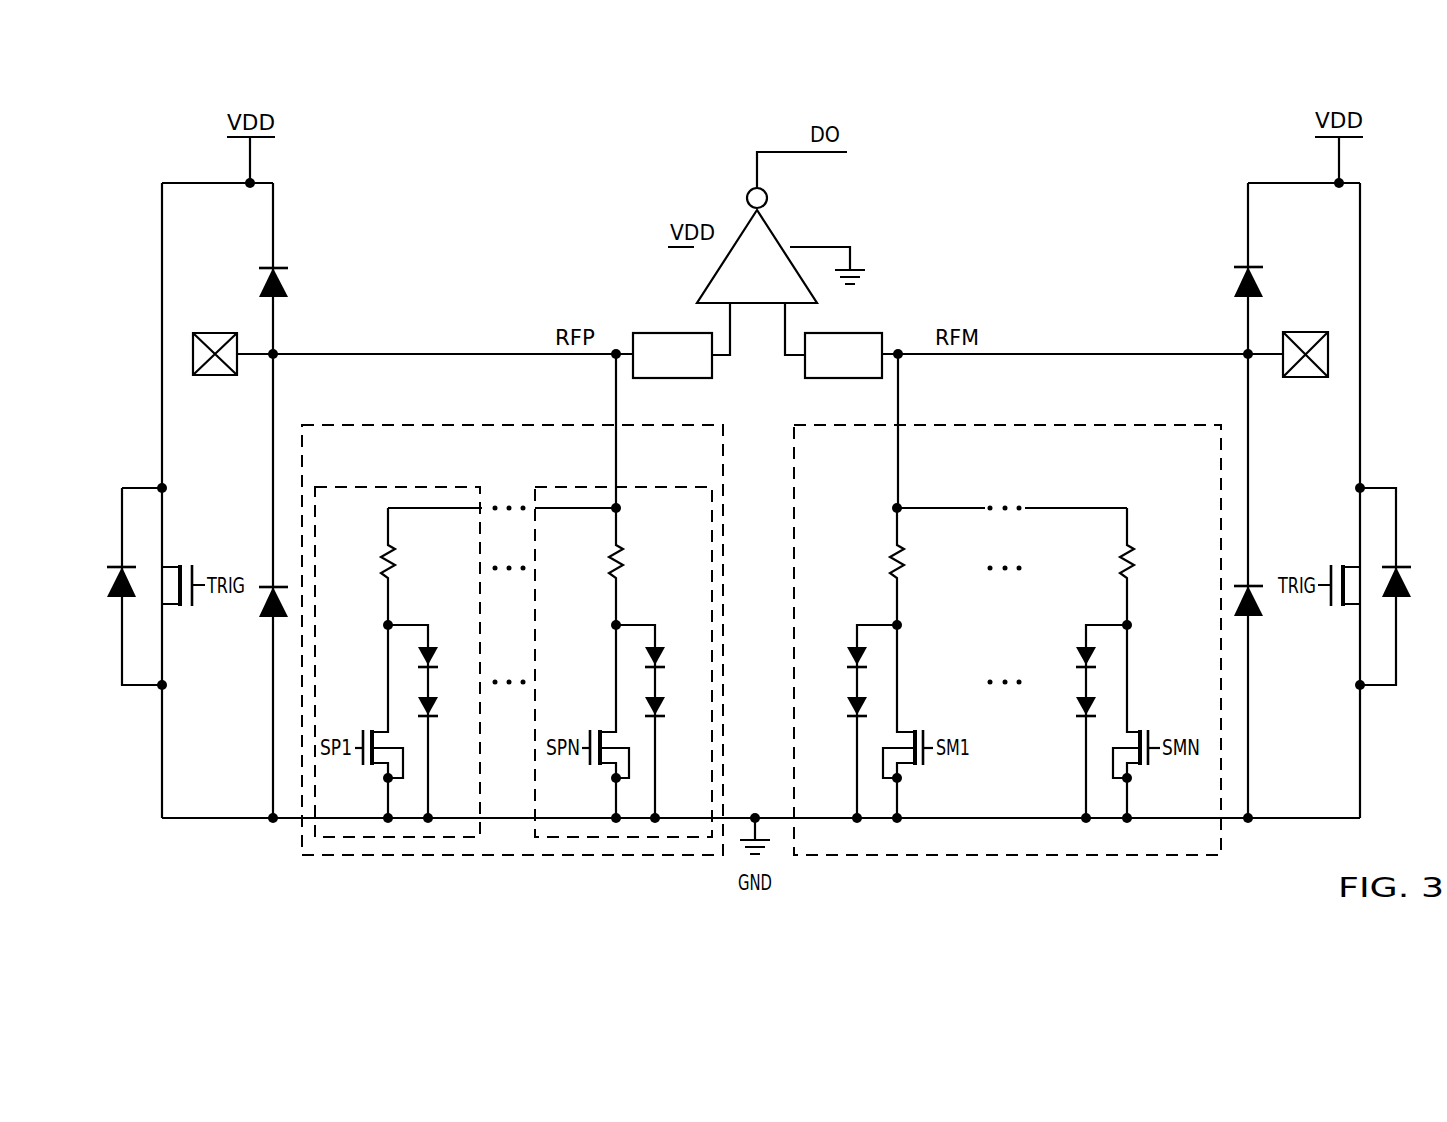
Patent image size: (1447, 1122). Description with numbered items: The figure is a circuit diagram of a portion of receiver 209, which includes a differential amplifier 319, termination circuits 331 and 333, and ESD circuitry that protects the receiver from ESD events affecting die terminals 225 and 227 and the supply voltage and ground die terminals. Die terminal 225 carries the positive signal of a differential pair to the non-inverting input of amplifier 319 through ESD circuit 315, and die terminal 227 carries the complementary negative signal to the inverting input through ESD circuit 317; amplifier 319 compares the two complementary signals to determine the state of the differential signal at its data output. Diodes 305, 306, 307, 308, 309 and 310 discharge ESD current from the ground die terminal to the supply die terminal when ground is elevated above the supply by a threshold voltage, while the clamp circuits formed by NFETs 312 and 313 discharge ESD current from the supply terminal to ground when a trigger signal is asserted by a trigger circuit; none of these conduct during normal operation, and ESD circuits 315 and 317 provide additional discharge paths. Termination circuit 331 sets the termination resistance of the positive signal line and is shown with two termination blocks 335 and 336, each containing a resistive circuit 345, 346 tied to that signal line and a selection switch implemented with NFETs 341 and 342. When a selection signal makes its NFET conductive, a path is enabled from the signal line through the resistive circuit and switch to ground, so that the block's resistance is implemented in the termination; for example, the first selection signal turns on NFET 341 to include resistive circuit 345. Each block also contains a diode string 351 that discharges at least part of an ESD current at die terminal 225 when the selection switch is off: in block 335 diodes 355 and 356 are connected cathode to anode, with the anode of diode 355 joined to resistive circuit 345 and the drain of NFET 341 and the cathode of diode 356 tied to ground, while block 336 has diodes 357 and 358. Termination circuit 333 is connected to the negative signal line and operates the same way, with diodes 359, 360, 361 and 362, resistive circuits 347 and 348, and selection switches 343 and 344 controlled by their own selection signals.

The receiver 209 is at (170, 104).
The die terminal 225 is at (227, 332).
The die terminal 227 is at (1300, 330).
The diode 305 is at (107, 586).
The diode 306 is at (259, 290).
The diode 307 is at (260, 607).
The diode 308 is at (1262, 285).
The diode 309 is at (1262, 607).
The diode 310 is at (1402, 592).
The NFET clamp circuit 312 is at (175, 562).
The NFET clamp circuit 313 is at (1350, 562).
The ESD circuit 315 is at (690, 370).
The ESD circuit 317 is at (860, 370).
The differential amplifier 319 is at (774, 277).
The termination circuit 331 is at (383, 423).
The termination circuit 333 is at (1148, 423).
The termination block 335 is at (388, 486).
The termination block 336 is at (642, 486).
The NFET selection switch 341 is at (378, 767).
The NFET selection switch 342 is at (610, 767).
The selection switch 343 is at (907, 765).
The selection switch 344 is at (1135, 765).
The resistive circuit 345 is at (380, 553).
The resistive circuit 346 is at (610, 555).
The resistive circuit 347 is at (905, 555).
The resistive circuit 348 is at (1135, 555).
The diode string 351 is at (418, 732).
The diode 355 is at (440, 655).
The diode 356 is at (440, 705).
The diode 357 is at (668, 655).
The diode 358 is at (668, 705).
The diode 359 is at (846, 654).
The diode 360 is at (846, 704).
The diode 361 is at (1075, 654).
The diode 362 is at (1075, 704).